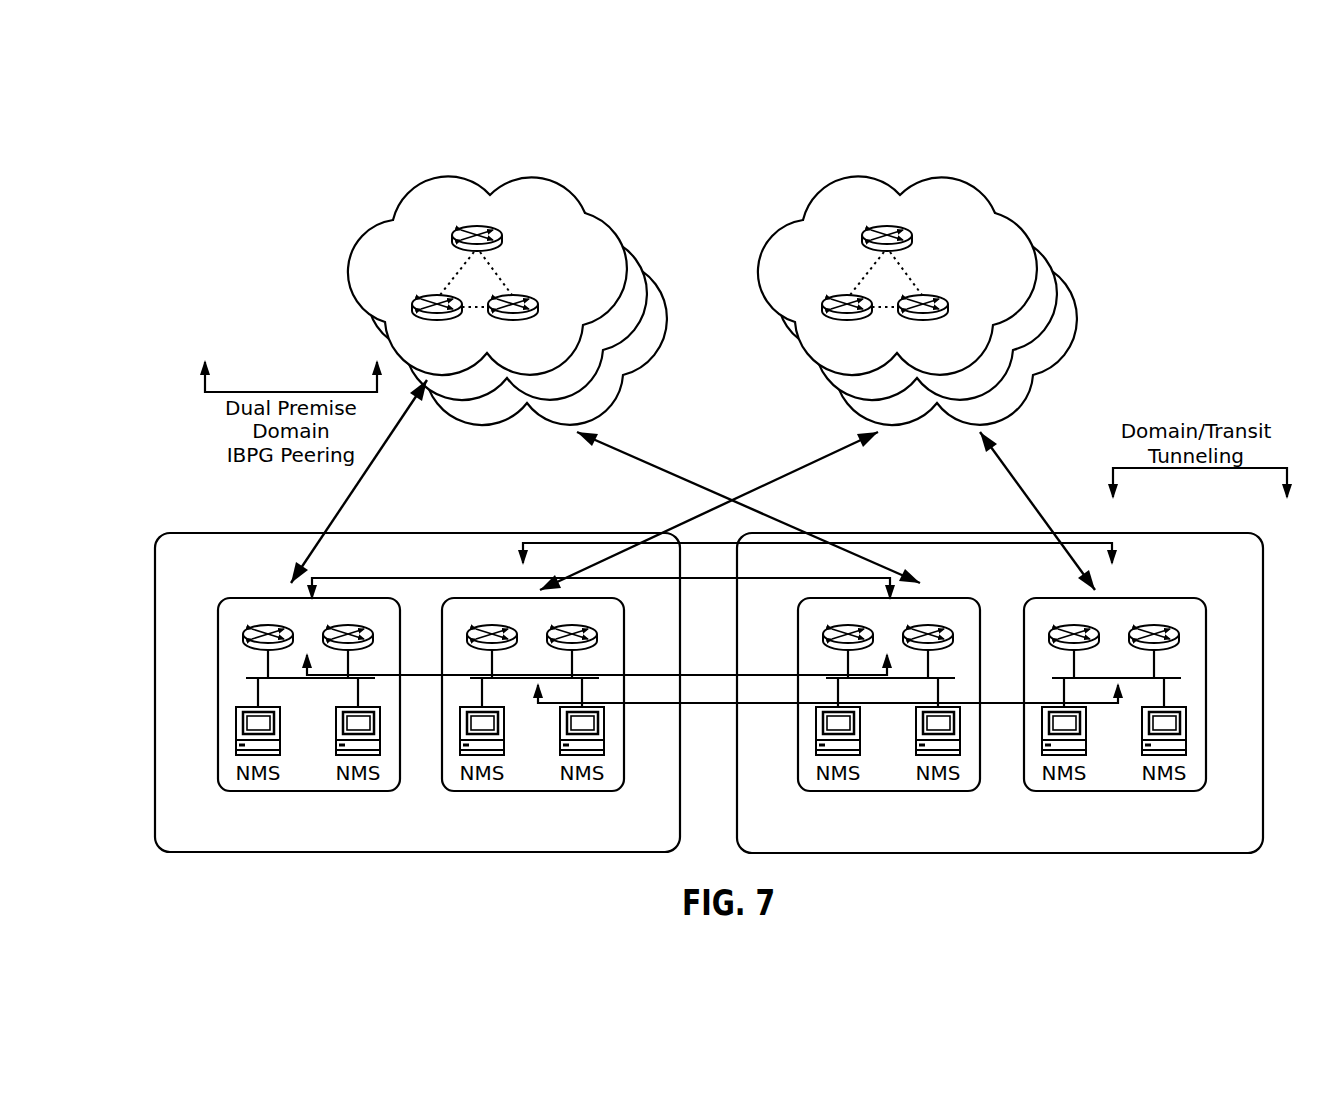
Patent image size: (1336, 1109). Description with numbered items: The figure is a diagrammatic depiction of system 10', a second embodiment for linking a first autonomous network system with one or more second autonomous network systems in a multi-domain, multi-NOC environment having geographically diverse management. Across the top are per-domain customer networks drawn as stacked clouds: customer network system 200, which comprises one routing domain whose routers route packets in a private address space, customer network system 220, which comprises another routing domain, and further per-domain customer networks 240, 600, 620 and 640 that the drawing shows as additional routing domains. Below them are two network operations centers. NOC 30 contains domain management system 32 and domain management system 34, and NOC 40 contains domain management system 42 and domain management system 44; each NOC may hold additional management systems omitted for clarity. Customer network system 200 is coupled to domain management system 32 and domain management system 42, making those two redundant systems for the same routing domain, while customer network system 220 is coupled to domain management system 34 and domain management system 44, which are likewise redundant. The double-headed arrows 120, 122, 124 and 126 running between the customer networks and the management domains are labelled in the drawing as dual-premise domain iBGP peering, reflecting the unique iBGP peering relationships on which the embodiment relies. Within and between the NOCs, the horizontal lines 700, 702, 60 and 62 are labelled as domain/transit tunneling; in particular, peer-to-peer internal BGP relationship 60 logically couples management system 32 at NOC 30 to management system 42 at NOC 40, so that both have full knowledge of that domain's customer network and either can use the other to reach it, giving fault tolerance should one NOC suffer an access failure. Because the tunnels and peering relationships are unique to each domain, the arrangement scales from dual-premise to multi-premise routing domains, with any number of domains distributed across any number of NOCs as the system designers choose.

The system 10' is at (1067, 61).
The customer network system 200 is at (393, 218).
The customer network system 220 is at (645, 275).
The per-domain customer network 240 is at (670, 320).
The per-domain customer network 600 is at (803, 218).
The per-domain customer network 620 is at (1055, 275).
The per-domain customer network 640 is at (1080, 320).
The dual premise domain IBGP peering link 120 is at (372, 455).
The dual premise domain IBGP peering link 122 is at (810, 464).
The dual premise domain IBGP peering link 124 is at (655, 470).
The dual premise domain IBGP peering link 126 is at (1023, 480).
The domain/transit tunnel 700 is at (380, 578).
The domain/transit tunnel 702 is at (940, 545).
The peer-to-peer iBGP relationship 60 is at (694, 706).
The domain/transit tunnel 62 is at (693, 673).
The NOC 30 is at (155, 810).
The domain management system 32 is at (218, 672).
The domain management system 34 is at (624, 642).
The NOC 40 is at (1263, 810).
The domain management system 42 is at (798, 735).
The domain management system 44 is at (1206, 642).